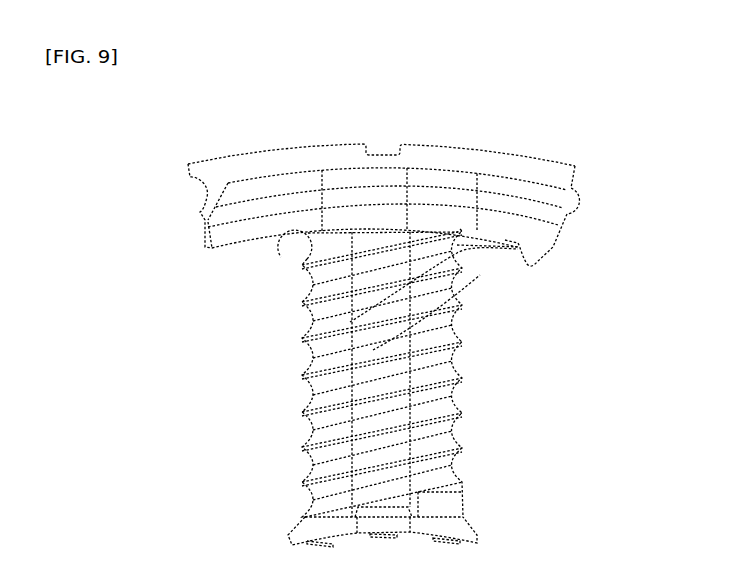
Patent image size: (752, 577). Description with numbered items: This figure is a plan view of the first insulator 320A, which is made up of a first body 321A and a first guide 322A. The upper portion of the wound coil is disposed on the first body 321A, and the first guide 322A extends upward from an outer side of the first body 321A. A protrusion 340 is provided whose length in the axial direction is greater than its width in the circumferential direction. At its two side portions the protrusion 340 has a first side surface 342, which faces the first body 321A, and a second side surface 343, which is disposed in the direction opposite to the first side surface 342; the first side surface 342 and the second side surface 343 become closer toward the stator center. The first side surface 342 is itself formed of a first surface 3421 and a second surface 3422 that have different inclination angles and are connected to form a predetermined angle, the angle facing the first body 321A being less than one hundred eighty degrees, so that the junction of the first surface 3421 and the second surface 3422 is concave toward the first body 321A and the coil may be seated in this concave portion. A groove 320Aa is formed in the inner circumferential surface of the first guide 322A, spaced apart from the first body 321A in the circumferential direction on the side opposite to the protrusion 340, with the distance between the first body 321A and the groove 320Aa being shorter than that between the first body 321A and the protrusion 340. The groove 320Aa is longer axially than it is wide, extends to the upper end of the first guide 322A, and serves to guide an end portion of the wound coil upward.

The first insulator 320A is at (244, 147).
The first guide 322A is at (457, 155).
The groove 320Aa is at (294, 243).
The first body 321A is at (305, 430).
The protrusion 340 is at (542, 262).
The first side surface 342 is at (213, 308).
The first surface 3421 is at (350, 322).
The second surface 3422 is at (373, 350).
The second side surface 343 is at (553, 253).